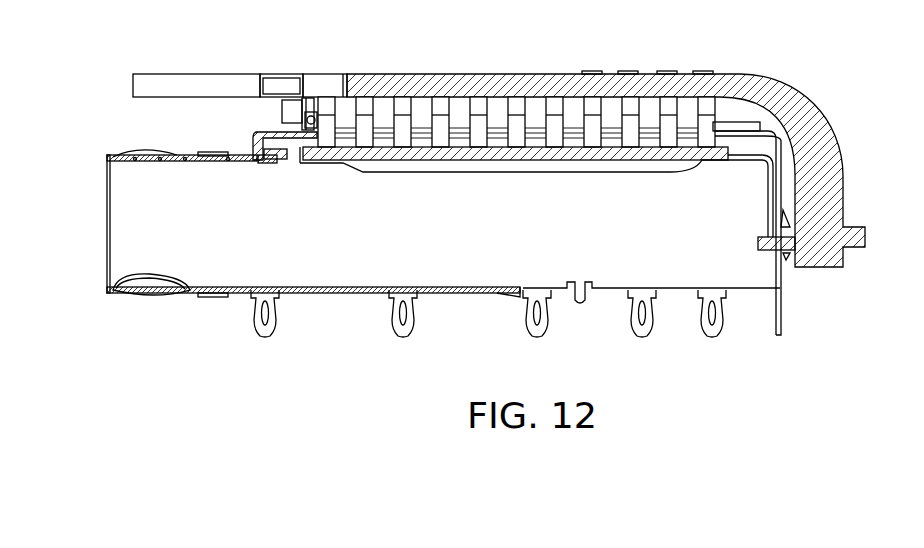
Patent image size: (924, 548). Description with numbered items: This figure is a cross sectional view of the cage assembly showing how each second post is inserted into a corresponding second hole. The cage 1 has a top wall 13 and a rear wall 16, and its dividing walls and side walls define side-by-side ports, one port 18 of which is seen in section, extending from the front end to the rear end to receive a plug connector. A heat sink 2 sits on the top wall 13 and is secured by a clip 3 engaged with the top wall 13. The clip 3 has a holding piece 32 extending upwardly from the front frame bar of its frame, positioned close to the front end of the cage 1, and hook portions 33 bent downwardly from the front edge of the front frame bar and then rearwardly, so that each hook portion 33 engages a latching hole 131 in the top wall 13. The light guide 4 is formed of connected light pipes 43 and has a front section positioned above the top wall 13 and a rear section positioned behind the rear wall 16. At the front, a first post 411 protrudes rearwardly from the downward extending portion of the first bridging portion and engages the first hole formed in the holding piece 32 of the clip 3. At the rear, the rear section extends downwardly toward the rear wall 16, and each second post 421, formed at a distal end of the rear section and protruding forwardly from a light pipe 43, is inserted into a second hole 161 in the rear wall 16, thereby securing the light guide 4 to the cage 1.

The cage 1 is at (137, 220).
The heat sink 2 is at (465, 162).
The clip 3 is at (251, 134).
The light guide 4 is at (499, 143).
The top wall 13 is at (313, 162).
The rear wall 16 is at (776, 205).
The port 18 is at (602, 242).
The holding piece 32 is at (304, 99).
The hook portion 33 is at (262, 150).
The light pipe 43 is at (560, 73).
The latching hole 131 is at (264, 164).
The second hole 161 is at (776, 224).
The first post 411 is at (314, 114).
The second post 421 is at (760, 247).